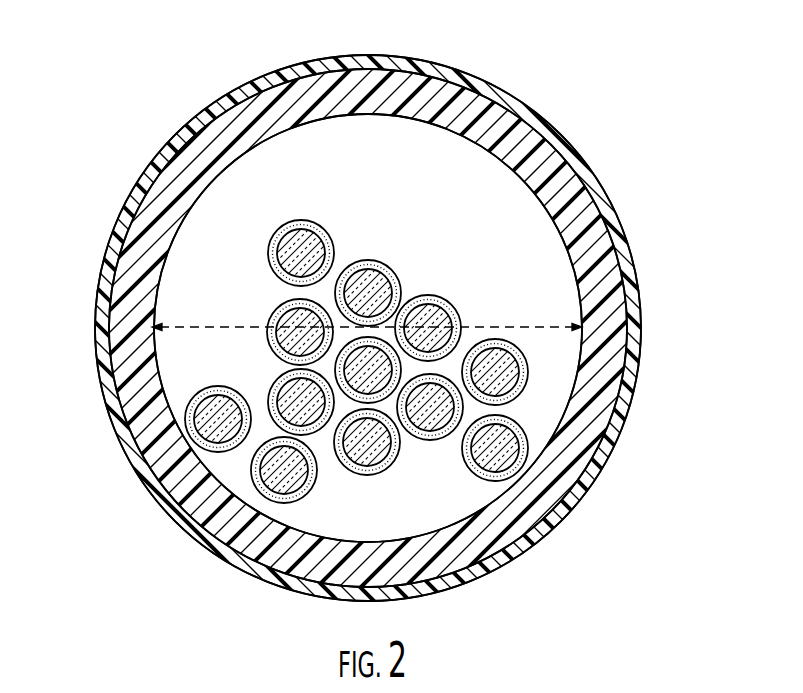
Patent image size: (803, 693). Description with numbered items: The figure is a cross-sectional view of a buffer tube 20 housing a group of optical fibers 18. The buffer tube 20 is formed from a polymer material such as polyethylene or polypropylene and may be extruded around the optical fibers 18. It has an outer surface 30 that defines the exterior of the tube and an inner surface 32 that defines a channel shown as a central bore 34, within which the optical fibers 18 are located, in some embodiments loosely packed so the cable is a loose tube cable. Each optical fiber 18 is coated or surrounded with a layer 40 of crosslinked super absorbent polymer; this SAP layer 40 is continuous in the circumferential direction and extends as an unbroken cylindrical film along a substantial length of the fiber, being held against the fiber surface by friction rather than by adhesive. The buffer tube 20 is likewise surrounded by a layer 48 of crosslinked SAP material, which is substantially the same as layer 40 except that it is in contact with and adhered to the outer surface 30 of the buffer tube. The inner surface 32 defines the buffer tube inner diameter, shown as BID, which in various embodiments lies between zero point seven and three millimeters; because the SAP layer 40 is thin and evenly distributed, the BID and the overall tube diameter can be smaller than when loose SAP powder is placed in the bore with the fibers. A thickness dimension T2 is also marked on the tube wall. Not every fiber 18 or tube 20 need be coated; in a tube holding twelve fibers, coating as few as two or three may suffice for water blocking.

The buffer tube 20 is at (686, 87).
The optical fibers 18 is at (437, 402).
The outer surface 30 is at (570, 138).
The inner surface 32 is at (442, 134).
The central bore 34 is at (530, 225).
The SAP layer 40 is at (525, 362).
The SAP layer 48 is at (639, 289).
The outer layer thickness T2 is at (266, 70).
The buffer tube inner diameter BID is at (313, 380).